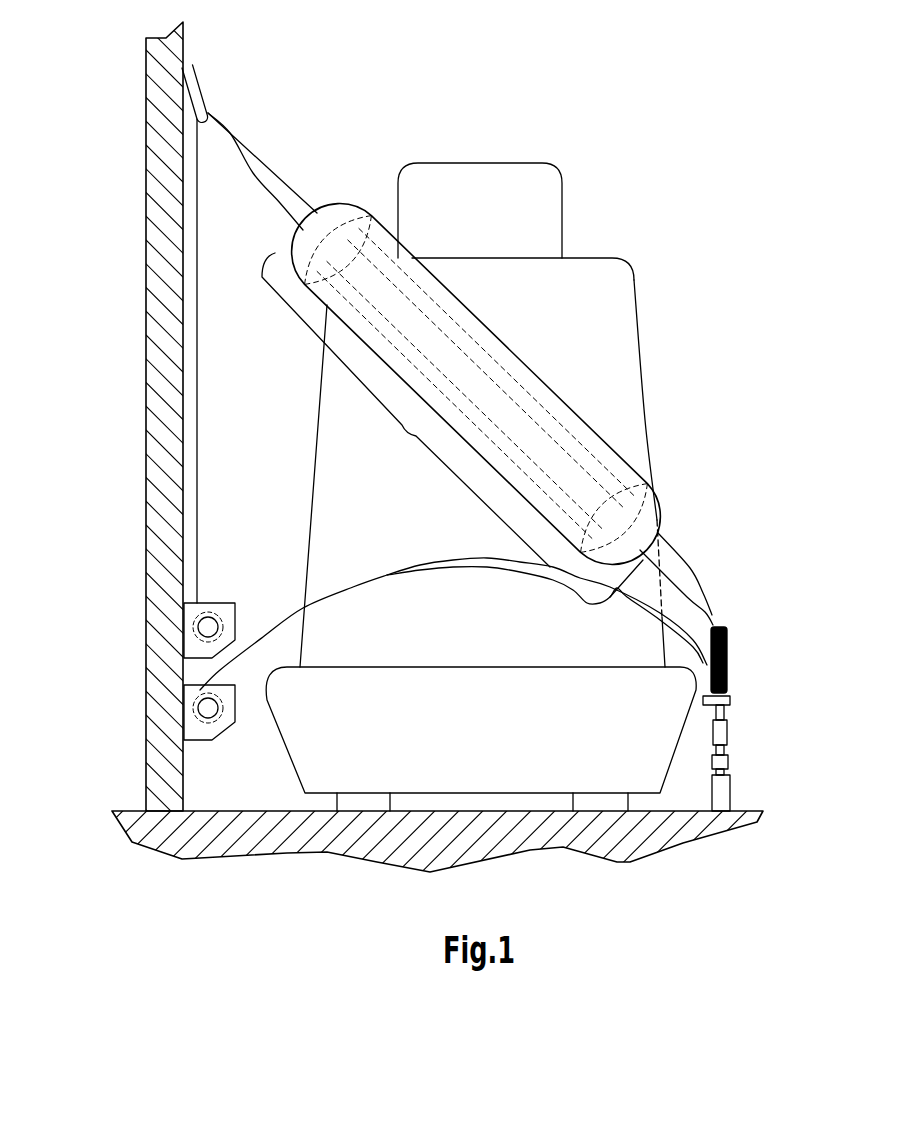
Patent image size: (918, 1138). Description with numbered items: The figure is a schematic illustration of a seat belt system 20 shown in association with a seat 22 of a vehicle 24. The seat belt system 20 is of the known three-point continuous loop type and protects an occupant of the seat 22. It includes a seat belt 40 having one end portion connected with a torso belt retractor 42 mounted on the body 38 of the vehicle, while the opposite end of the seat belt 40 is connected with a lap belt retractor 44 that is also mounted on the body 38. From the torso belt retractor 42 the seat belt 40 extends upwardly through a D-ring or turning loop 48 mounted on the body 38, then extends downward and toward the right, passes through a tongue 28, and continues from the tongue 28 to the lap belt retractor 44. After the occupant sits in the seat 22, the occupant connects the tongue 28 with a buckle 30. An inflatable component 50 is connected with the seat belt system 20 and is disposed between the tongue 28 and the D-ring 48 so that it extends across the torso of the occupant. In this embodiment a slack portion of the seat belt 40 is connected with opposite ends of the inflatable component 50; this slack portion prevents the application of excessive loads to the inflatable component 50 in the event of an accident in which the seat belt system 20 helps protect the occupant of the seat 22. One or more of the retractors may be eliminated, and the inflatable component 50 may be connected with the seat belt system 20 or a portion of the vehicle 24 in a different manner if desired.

The seat belt system 20 is at (567, 402).
The seat 22 is at (628, 275).
The vehicle 24 is at (114, 855).
The tongue 28 is at (727, 647).
The buckle 30 is at (730, 699).
The body 38 is at (290, 838).
The seat belt 40 is at (277, 170).
The torso belt retractor 42 is at (168, 633).
The lap belt retractor 44 is at (168, 717).
The D-ring or turning loop 48 is at (187, 93).
The inflatable component 50 is at (406, 436).